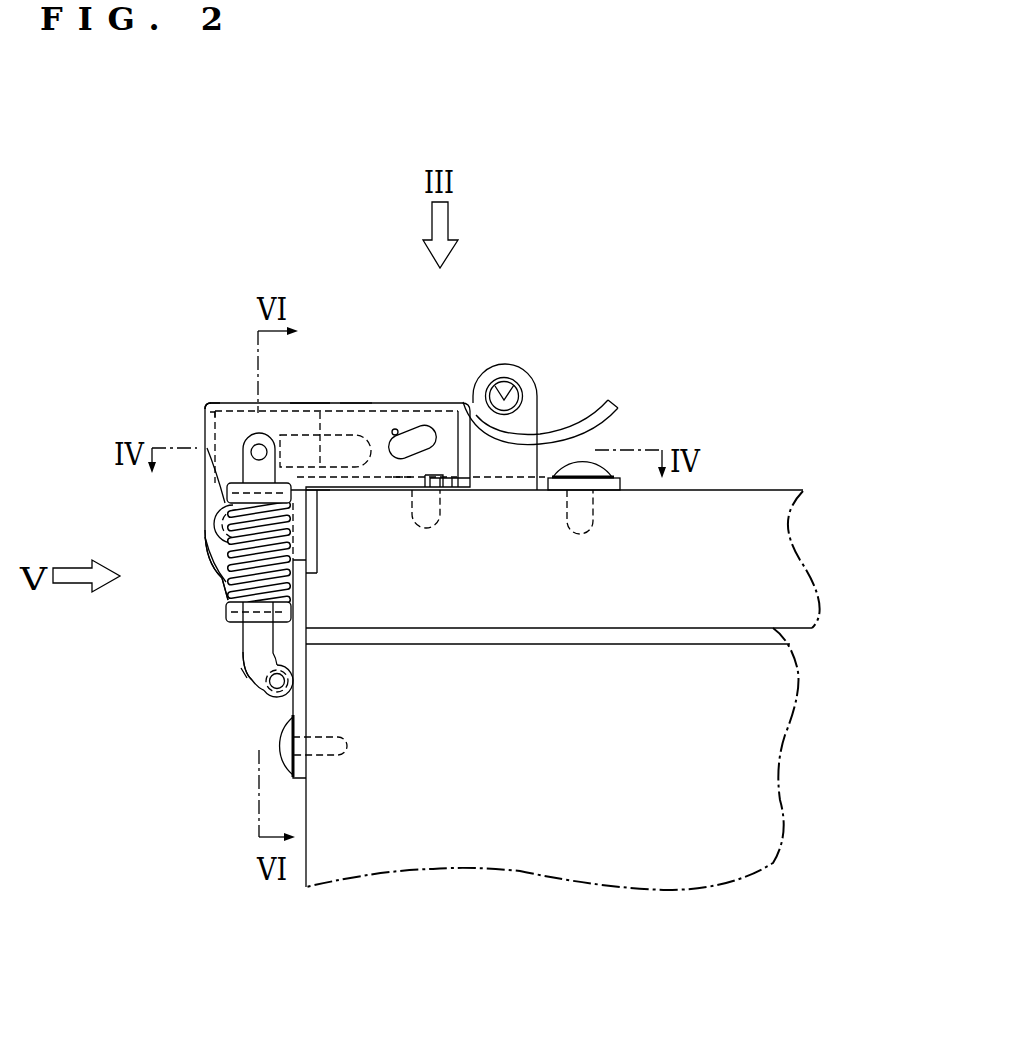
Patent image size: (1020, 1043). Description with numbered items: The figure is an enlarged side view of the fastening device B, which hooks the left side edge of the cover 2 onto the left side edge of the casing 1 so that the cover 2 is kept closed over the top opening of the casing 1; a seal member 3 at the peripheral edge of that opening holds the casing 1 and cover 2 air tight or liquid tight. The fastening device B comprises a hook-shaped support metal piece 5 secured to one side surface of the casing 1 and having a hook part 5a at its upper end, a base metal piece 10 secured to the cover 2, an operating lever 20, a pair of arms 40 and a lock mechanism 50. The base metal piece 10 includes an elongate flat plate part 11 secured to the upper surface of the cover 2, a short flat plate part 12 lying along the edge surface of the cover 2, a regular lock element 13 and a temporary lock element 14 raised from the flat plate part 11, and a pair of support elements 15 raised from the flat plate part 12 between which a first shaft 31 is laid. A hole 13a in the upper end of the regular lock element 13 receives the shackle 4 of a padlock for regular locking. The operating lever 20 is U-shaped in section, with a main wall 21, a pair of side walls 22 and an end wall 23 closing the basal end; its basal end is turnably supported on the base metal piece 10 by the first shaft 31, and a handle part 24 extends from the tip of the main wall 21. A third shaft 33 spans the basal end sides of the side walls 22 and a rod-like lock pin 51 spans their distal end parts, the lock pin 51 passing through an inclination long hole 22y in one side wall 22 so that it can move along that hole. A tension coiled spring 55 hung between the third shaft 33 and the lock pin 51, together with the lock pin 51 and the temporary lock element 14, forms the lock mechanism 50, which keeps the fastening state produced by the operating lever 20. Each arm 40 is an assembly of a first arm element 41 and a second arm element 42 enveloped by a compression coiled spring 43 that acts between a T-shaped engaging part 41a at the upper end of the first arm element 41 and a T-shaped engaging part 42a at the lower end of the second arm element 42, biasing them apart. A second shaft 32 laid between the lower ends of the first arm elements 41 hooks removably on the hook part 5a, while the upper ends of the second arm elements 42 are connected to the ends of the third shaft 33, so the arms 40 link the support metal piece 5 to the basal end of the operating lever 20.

The casing 1 is at (760, 725).
The cover 2 is at (782, 573).
The seal member 3 is at (673, 633).
The shackle 4 is at (520, 390).
The support metal piece 5 is at (308, 708).
The hook part 5a is at (252, 672).
The base metal piece 10 is at (610, 504).
The flat plate part 11 is at (557, 490).
The flat plate part 12 is at (297, 553).
The regular lock element 13 is at (537, 407).
The hole 13a is at (507, 392).
The temporary lock element 14 is at (405, 400).
The support elements 15 is at (212, 560).
The operating lever 20 is at (378, 388).
The main wall 21 is at (305, 400).
The side walls 22 is at (458, 438).
The inclination long hole 22y is at (398, 430).
The end wall 23 is at (203, 437).
The handle part 24 is at (596, 410).
The first shaft 31 is at (218, 522).
The second shaft 32 is at (272, 690).
The third shaft 33 is at (258, 442).
The arm 40 is at (216, 645).
The first arm element 41 is at (238, 653).
The engaging part 41a is at (207, 448).
The second arm element 42 is at (242, 467).
The engaging part 42a is at (222, 615).
The compression coiled spring 43 is at (232, 585).
The lock mechanism 50 is at (356, 505).
The lock pin 51 is at (400, 462).
The tension coiled spring 55 is at (350, 400).
The fastening device B is at (175, 402).